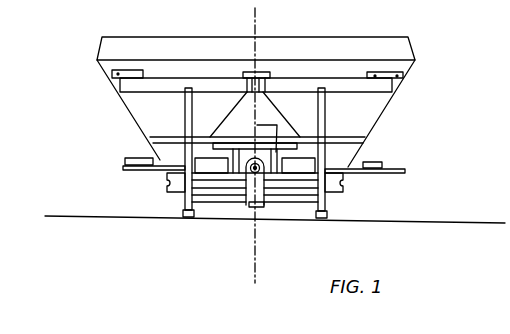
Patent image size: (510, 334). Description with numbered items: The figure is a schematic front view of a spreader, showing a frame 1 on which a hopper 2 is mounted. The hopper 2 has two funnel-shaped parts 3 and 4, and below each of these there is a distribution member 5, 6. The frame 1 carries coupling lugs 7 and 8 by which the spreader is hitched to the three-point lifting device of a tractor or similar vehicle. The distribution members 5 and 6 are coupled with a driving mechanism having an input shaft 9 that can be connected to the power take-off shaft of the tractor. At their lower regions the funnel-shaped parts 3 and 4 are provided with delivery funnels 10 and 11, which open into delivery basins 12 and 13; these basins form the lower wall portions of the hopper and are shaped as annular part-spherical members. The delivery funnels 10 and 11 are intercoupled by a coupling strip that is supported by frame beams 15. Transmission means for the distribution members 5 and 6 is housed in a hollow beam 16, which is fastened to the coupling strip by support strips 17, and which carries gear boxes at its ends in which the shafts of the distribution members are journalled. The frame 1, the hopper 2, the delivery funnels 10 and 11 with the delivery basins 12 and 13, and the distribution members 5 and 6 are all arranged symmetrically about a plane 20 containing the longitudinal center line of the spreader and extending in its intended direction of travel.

The frame 1 is at (182, 109).
The hopper 2 is at (152, 36).
The funnel-shaped part 3 is at (128, 108).
The funnel-shaped part 4 is at (382, 115).
The distribution member 5 is at (122, 168).
The distribution member 6 is at (391, 171).
The coupling lug 7 is at (268, 70).
The coupling lug 8 is at (167, 187).
The input shaft 9 is at (247, 186).
The delivery funnel 10 is at (148, 137).
The delivery funnel 11 is at (363, 142).
The delivery basin 12 is at (160, 170).
The delivery basin 13 is at (348, 163).
The frame beam 15 is at (203, 148).
The hollow beam 16 is at (217, 183).
The support strip 17 is at (238, 150).
The plane 20 is at (255, 20).